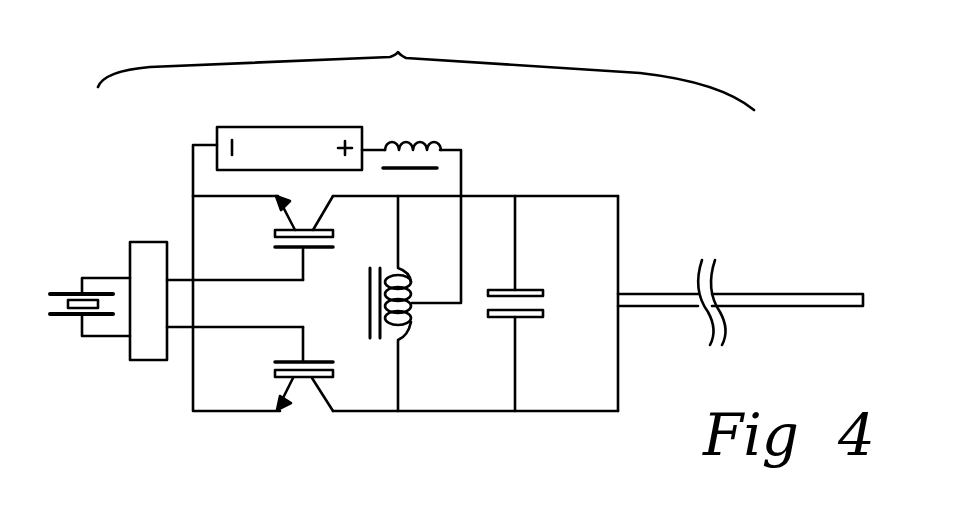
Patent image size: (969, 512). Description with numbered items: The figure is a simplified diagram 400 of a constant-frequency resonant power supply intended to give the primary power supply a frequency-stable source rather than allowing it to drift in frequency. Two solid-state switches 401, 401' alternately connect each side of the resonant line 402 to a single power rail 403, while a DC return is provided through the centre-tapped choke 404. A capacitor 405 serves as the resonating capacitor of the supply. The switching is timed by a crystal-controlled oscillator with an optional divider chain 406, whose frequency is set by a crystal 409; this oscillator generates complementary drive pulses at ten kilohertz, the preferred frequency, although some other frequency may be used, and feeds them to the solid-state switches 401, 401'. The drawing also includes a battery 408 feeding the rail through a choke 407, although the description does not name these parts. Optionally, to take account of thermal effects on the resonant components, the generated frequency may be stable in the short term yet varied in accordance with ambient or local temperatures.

The simplified diagram 400 is at (426, 61).
The solid-state switch 401 is at (270, 238).
The solid-state switch 401' is at (267, 369).
The resonant line 402 is at (797, 292).
The power rail 403 is at (193, 210).
The centre-tapped choke 404 is at (363, 308).
The capacitor 405 is at (503, 322).
The crystal-controlled oscillator with optional divider chain 406 is at (145, 360).
The choke inductor 407 is at (424, 133).
The battery 408 is at (282, 127).
The crystal 409 is at (80, 249).